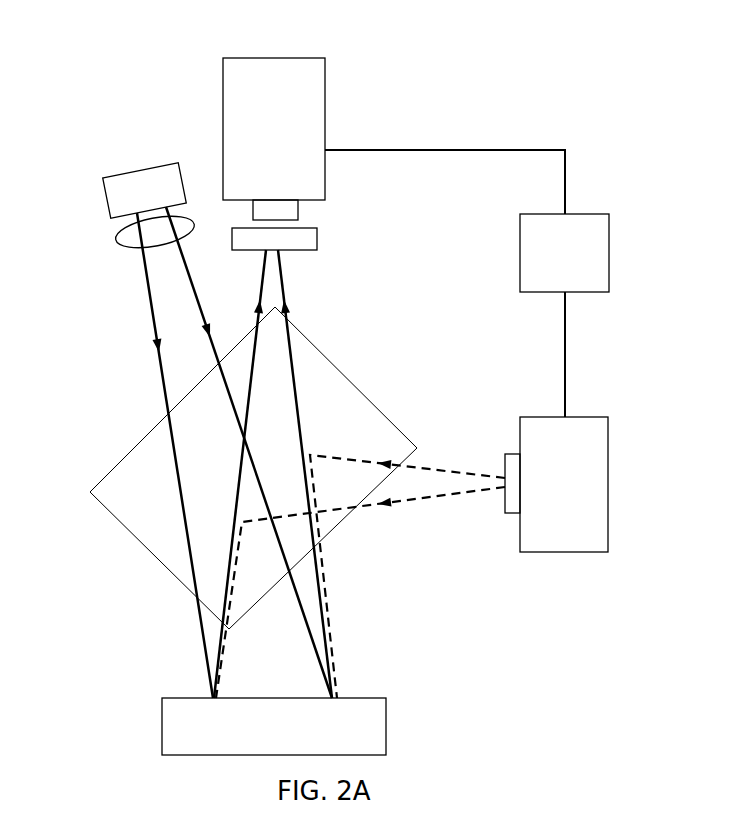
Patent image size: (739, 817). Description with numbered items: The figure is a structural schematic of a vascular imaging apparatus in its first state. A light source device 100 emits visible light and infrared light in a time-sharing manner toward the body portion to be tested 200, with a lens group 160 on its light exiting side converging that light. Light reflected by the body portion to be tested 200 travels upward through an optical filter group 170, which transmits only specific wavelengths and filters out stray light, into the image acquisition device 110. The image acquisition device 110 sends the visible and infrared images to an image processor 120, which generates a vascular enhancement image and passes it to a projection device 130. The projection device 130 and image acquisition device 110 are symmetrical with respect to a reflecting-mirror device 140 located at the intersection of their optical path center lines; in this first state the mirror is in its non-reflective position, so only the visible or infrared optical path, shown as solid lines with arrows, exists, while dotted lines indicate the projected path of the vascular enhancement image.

The light source device 100 is at (145, 176).
The image acquisition device 110 is at (313, 139).
The image processor 120 is at (527, 255).
The projection device 130 is at (546, 519).
The reflecting-mirror device 140 is at (253, 468).
The lens group 160 is at (123, 232).
The optical filter group 170 is at (323, 236).
The body portion to be tested 200 is at (320, 726).